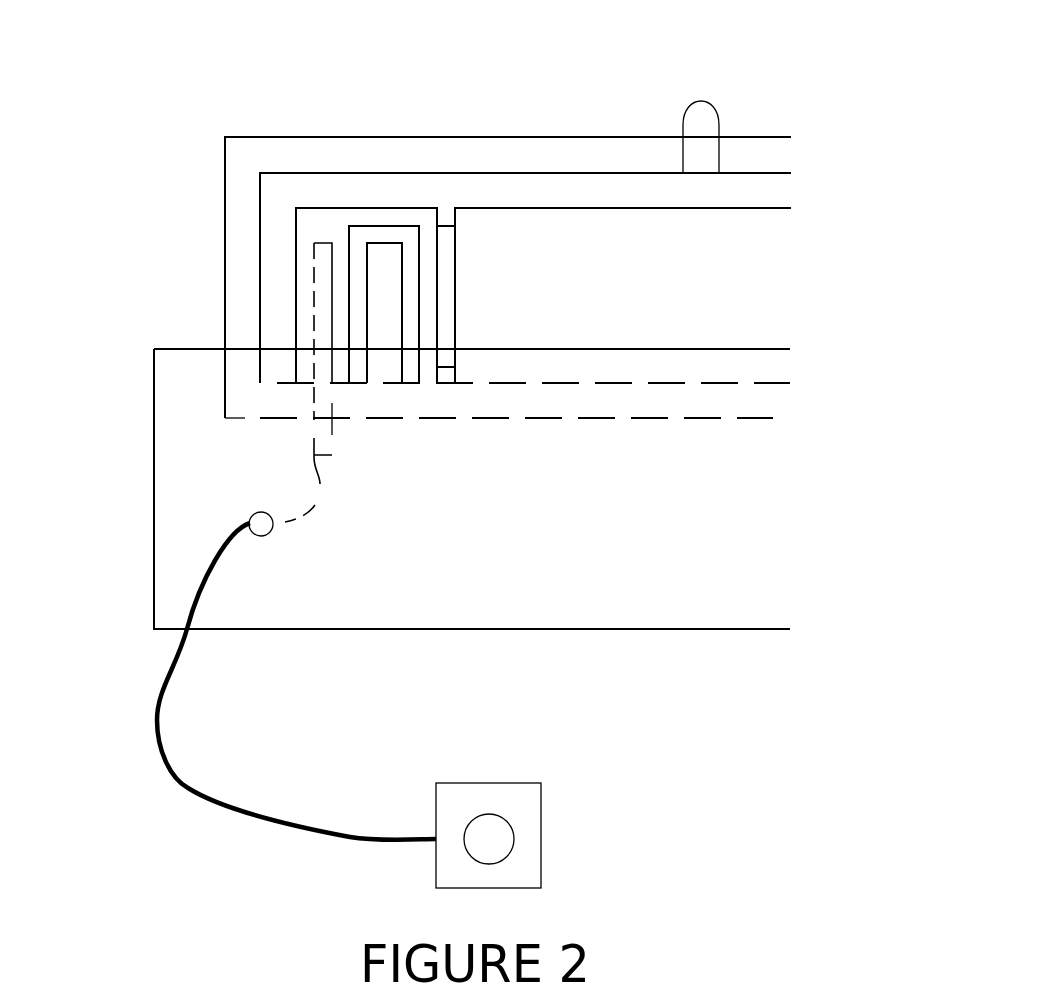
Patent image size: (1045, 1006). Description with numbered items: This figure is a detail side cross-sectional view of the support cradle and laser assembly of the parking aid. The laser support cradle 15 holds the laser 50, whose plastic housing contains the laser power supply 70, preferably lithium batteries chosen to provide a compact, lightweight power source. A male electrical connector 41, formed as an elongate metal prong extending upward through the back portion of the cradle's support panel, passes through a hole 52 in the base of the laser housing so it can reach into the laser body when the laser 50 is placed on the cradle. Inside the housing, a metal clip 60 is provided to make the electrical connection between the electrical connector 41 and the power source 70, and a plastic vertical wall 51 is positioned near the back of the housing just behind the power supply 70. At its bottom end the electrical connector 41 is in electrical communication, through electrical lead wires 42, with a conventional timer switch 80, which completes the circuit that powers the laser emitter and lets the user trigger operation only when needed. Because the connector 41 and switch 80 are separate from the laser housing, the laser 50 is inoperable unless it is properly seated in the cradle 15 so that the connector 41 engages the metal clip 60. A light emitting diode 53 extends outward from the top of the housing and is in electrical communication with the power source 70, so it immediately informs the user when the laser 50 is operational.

The laser support cradle 15 is at (602, 547).
The male electrical connector 41 is at (315, 295).
The electrical lead wire 42 is at (188, 788).
The laser 50 is at (560, 155).
The plastic vertical wall 51 is at (384, 315).
The hole 52 is at (313, 419).
The light emitting diode 53 is at (701, 119).
The metal clip 60 is at (331, 227).
The laser power supply 70 is at (700, 262).
The timer switch 80 is at (543, 821).